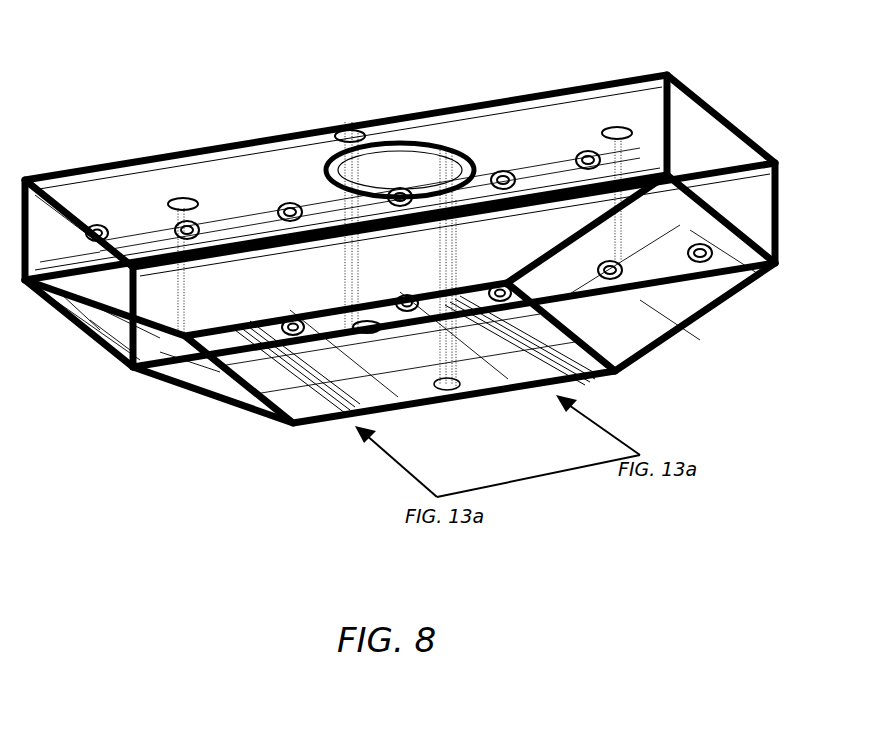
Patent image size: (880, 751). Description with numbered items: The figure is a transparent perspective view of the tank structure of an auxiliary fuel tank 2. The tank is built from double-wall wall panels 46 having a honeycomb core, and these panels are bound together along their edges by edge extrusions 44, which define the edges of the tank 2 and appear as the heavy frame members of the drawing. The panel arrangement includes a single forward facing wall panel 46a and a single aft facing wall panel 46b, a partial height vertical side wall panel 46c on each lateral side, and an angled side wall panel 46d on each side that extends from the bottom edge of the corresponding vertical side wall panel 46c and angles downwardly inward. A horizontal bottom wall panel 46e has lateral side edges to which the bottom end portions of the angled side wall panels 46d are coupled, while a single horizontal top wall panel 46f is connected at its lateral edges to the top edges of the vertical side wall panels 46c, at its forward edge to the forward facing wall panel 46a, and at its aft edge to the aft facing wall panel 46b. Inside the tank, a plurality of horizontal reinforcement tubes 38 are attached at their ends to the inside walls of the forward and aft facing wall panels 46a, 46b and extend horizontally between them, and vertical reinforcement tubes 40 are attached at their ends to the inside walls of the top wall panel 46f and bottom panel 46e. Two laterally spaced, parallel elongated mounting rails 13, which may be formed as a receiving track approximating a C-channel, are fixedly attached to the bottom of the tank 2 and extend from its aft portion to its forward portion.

The auxiliary fuel tank 2 is at (350, 120).
The mounting rail 13 is at (287, 400).
The horizontal reinforcement tube 38 is at (257, 227).
The vertical reinforcement tube 40 is at (455, 240).
The edge extrusion 44 is at (247, 140).
The wall panel 46 is at (466, 367).
The forward facing wall panel 46a is at (153, 373).
The aft facing wall panel 46b is at (150, 193).
The vertical side wall panel 46c is at (93, 273).
The angled side wall panel 46d is at (622, 308).
The horizontal bottom wall panel 46e is at (372, 377).
The horizontal top wall panel 46f is at (470, 143).